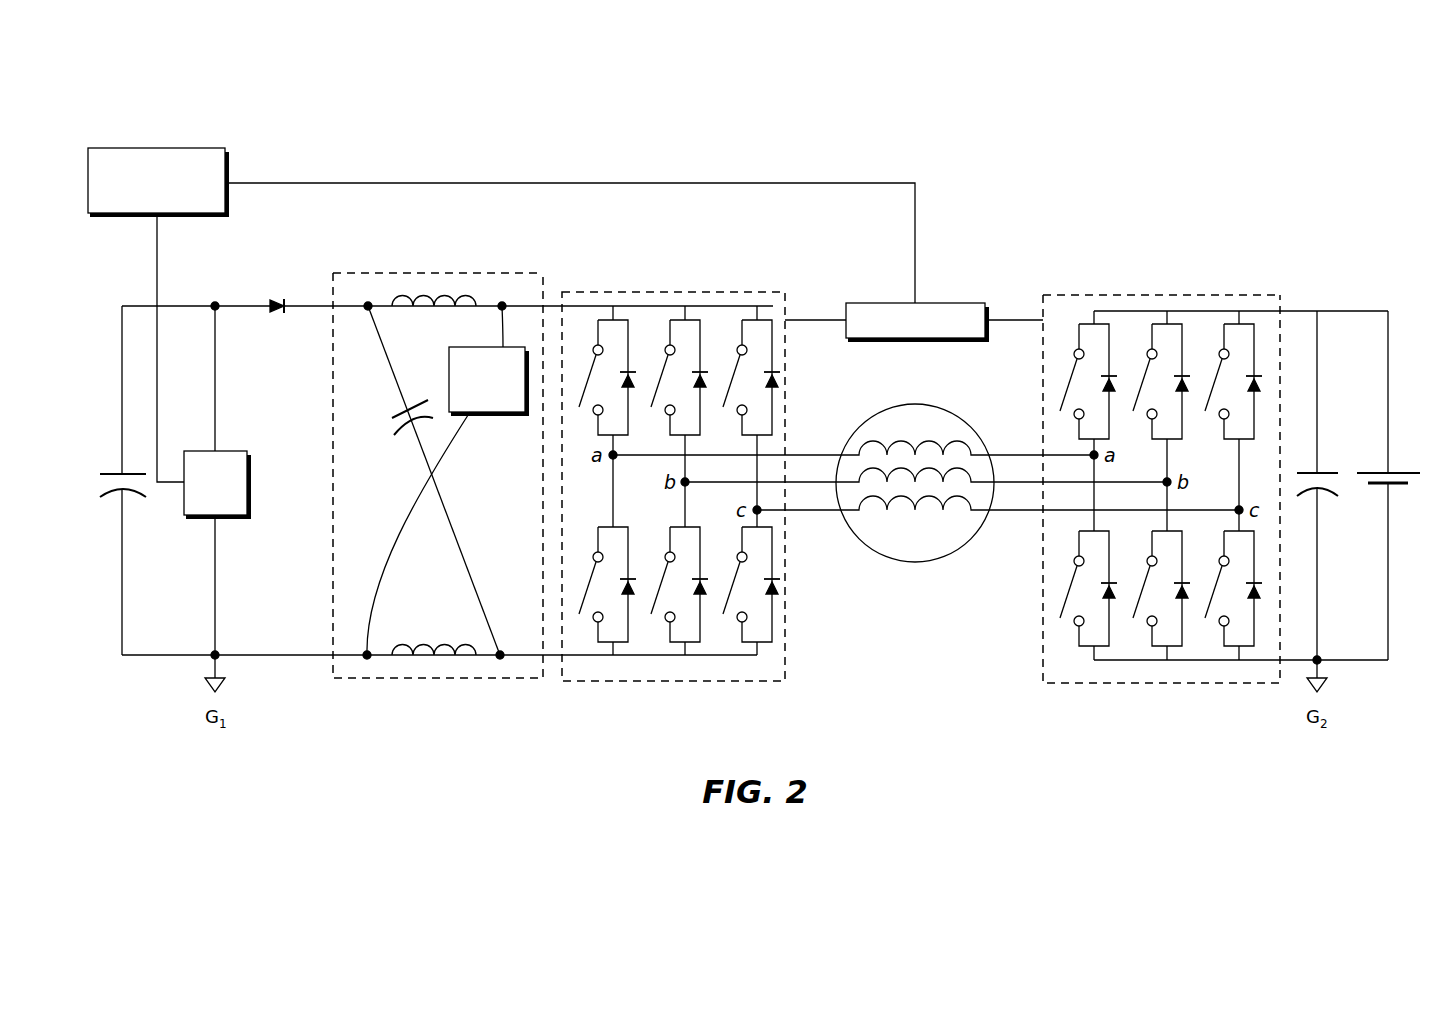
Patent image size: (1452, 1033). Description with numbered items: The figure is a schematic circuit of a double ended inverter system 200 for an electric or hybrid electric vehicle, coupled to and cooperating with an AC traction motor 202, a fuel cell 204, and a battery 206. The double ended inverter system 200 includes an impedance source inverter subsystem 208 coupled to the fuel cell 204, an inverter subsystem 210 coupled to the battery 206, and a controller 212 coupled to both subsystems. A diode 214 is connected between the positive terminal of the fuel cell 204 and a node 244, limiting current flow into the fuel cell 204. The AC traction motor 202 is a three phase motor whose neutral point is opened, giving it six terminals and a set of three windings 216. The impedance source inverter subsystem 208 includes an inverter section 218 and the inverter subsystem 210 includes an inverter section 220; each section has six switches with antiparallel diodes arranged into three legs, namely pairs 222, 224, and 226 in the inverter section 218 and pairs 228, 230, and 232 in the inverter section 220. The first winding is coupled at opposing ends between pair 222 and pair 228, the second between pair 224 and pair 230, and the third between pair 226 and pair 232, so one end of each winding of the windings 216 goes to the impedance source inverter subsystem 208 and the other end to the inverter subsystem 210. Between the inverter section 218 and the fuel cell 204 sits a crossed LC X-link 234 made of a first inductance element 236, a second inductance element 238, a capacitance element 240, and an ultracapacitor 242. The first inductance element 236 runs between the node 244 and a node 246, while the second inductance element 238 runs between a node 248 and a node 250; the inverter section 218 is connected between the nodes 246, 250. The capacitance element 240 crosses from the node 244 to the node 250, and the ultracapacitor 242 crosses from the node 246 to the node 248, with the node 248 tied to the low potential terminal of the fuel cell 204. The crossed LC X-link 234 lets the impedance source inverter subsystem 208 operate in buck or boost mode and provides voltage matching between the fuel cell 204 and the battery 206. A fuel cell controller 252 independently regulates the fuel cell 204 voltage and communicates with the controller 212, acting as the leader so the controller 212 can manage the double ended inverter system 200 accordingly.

The double ended inverter system 200 is at (1132, 130).
The AC traction motor 202 is at (866, 418).
The fuel cell 204 is at (233, 451).
The battery 206 is at (1405, 461).
The impedance source inverter subsystem 208 is at (557, 266).
The inverter subsystem 210 is at (1174, 278).
The controller 212 is at (945, 303).
The diode 214 is at (277, 296).
The windings 216 is at (930, 518).
The inverter section 218 is at (627, 292).
The inverter section 220 is at (1262, 295).
The pair 222 is at (614, 668).
The pair 224 is at (686, 668).
The pair 226 is at (758, 668).
The pair 228 is at (1093, 672).
The pair 230 is at (1166, 672).
The pair 232 is at (1238, 672).
The crossed LC X-link 234 is at (415, 272).
The first inductance element 236 is at (425, 296).
The second inductance element 238 is at (425, 645).
The capacitance element 240 is at (396, 414).
The ultracapacitor 242 is at (512, 416).
The node 244 is at (366, 300).
The node 246 is at (503, 300).
The node 248 is at (365, 660).
The node 250 is at (500, 660).
The fuel cell controller 252 is at (196, 148).